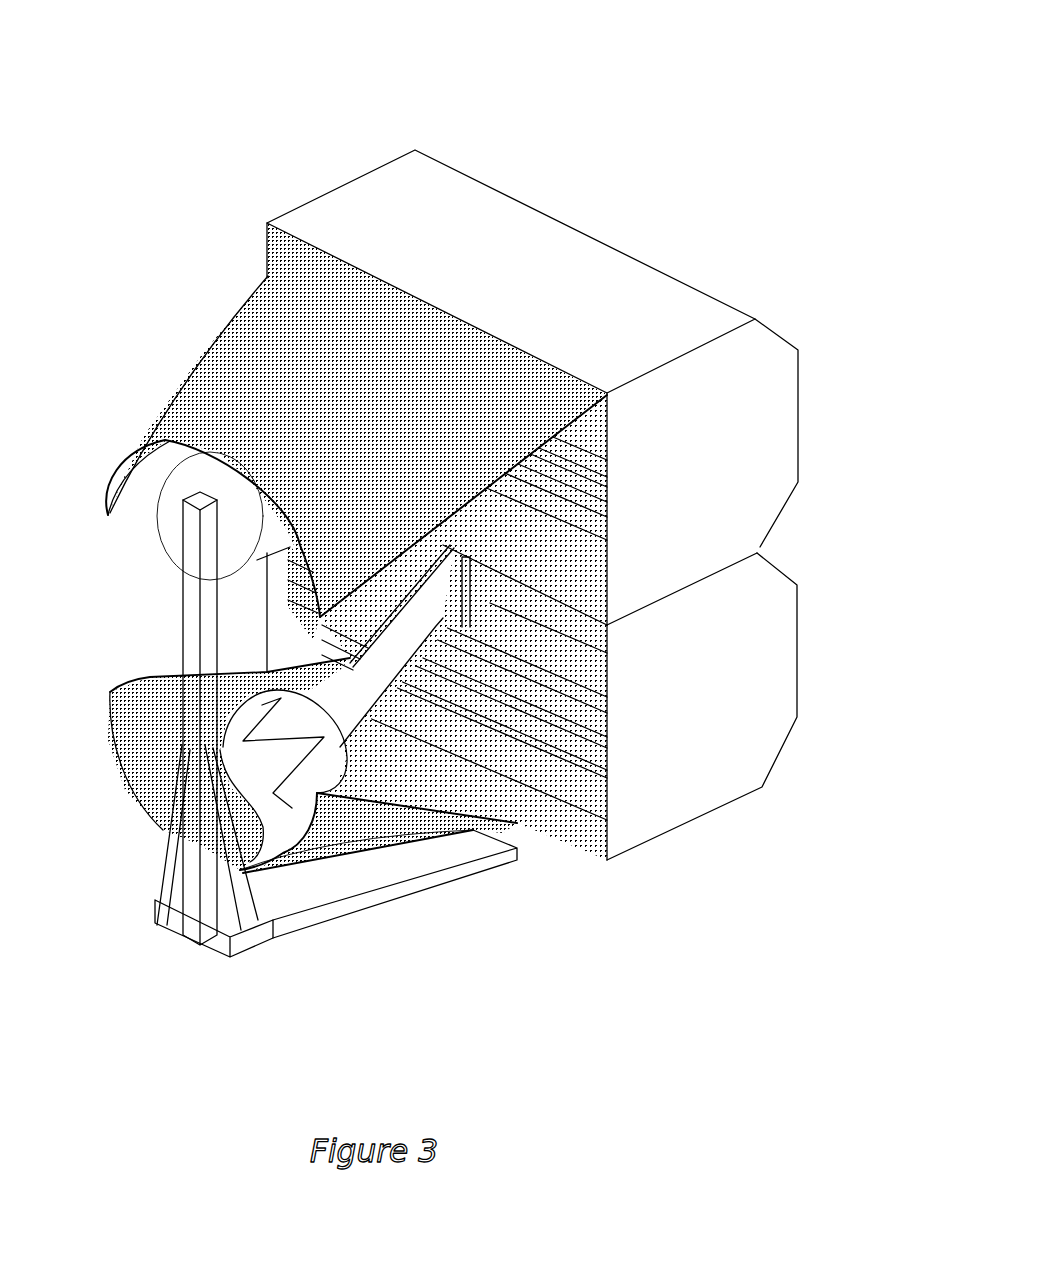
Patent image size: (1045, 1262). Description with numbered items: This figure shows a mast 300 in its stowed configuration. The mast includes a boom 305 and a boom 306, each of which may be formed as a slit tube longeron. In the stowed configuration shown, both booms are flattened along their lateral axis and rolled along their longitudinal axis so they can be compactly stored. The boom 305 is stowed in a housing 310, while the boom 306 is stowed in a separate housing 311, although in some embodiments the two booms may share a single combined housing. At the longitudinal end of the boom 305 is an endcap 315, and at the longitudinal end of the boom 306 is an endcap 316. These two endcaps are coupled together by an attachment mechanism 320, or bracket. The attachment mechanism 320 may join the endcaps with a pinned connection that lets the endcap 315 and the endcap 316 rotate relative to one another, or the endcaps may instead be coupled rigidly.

The mast 300 is at (556, 90).
The boom 306 is at (267, 383).
The housing 311 is at (532, 387).
The housing 310 is at (584, 702).
The endcap 316 is at (172, 503).
The endcap 315 is at (233, 930).
The attachment mechanism 320 is at (207, 930).
The boom 305 is at (503, 793).